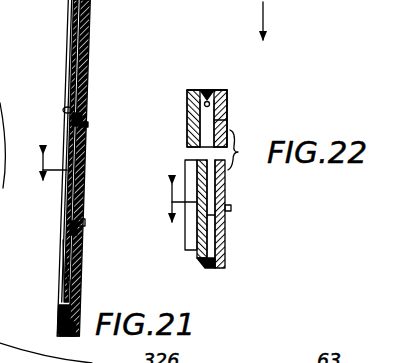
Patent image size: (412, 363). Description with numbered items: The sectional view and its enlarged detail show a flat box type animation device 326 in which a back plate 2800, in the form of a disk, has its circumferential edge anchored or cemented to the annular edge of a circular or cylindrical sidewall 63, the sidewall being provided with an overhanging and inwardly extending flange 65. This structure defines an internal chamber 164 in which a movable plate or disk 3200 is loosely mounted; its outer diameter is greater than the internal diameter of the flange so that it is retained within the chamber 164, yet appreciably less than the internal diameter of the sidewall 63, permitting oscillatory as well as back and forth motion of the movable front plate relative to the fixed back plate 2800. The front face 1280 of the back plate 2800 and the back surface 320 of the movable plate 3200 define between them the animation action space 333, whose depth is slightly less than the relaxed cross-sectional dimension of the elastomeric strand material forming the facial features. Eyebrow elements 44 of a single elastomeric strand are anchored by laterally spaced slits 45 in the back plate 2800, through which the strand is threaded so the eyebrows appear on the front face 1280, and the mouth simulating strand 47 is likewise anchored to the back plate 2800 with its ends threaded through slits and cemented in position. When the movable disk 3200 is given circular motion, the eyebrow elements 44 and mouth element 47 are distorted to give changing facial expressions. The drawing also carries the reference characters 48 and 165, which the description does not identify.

In FIG. 21, the device 326 is at (91, 29).
In FIG. 22, the device 326 is at (228, 82).
In FIG. 21, the back plate 2800 is at (89, 66).
In FIG. 22, the back plate 2800 is at (222, 110).
In FIG. 21, the movable plate 3200 is at (70, 72).
In FIG. 22, the movable plate 3200 is at (187, 177).
In FIG. 21, the back surface 320 is at (74, 108).
In FIG. 22, the back surface 320 is at (225, 128).
In FIG. 21, the eyebrow elements 44 is at (85, 120).
In FIG. 22, the eyebrow elements 44 is at (208, 193).
In FIG. 21, the slits 45 is at (84, 132).
In FIG. 22, the slits 45 is at (227, 204).
In FIG. 21, the stop 48 is at (83, 224).
In FIG. 21, the mouth element 47 is at (62, 248).
In FIG. 21, the animation action space 333 is at (78, 268).
In FIG. 22, the animation action space 333 is at (208, 228).
In FIG. 21, the bore 165 is at (80, 286).
In FIG. 21, the flange 65 is at (62, 328).
In FIG. 22, the flange 65 is at (188, 117).
In FIG. 21, the sidewall 63 is at (72, 336).
In FIG. 22, the sidewall 63 is at (195, 88).
In FIG. 22, the internal chamber 164 is at (217, 88).
In FIG. 22, the front face 1280 is at (202, 260).